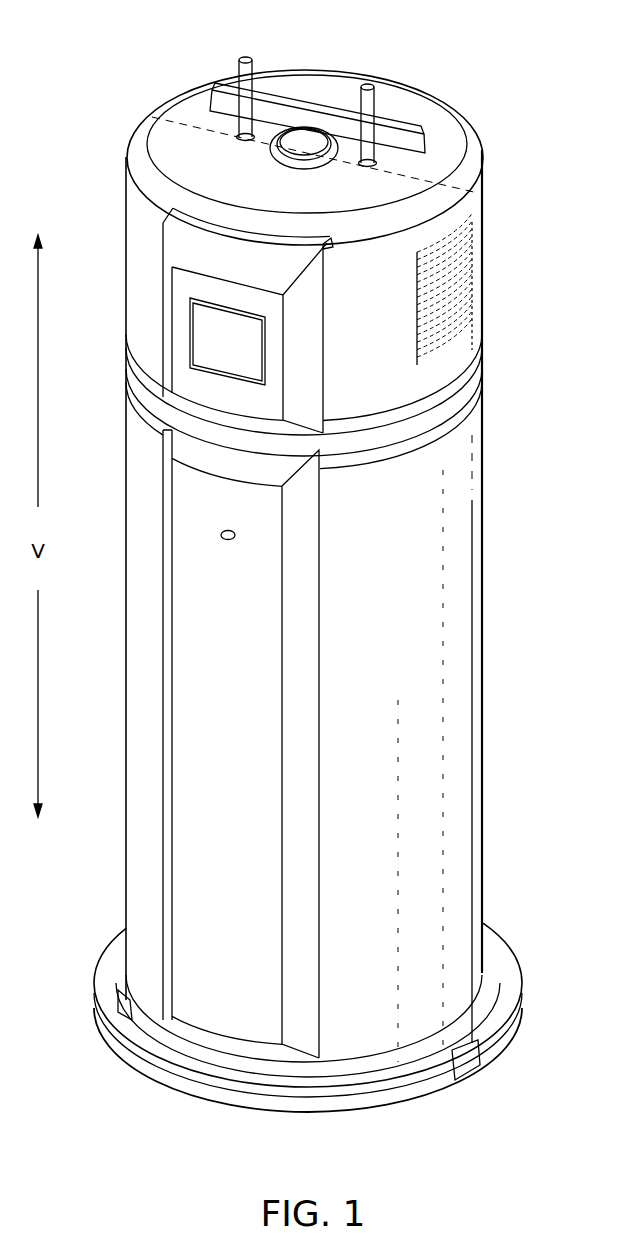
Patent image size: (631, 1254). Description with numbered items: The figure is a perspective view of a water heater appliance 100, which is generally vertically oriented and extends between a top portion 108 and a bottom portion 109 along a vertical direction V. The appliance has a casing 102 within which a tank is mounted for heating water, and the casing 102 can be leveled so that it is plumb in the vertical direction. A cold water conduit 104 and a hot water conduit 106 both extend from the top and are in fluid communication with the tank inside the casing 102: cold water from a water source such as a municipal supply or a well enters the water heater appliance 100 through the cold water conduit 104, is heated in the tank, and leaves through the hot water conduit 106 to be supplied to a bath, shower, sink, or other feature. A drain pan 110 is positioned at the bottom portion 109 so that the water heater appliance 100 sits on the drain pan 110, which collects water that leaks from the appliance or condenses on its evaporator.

The water heater appliance 100 is at (518, 122).
The casing 102 is at (455, 517).
The cold water conduit 104 is at (237, 70).
The hot water conduit 106 is at (378, 100).
The top portion 108 is at (108, 148).
The bottom portion 109 is at (80, 970).
The drain pan 110 is at (537, 980).